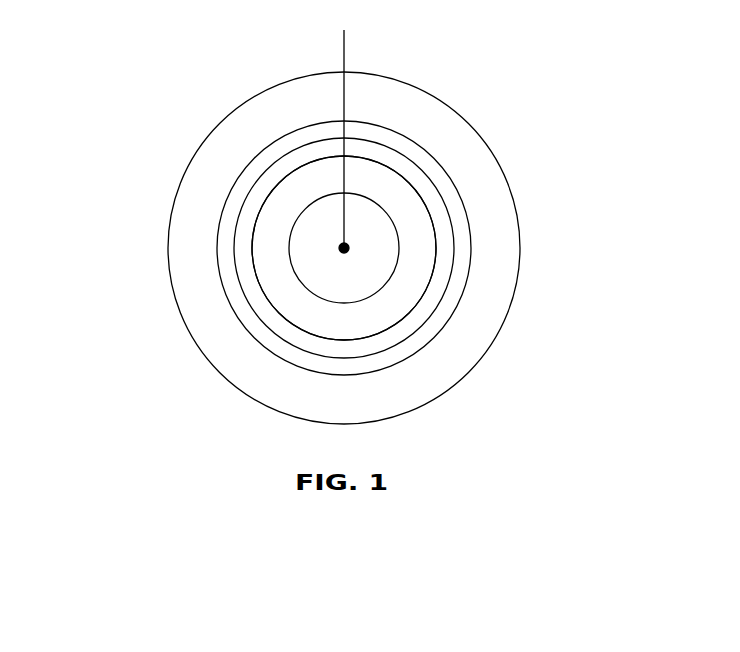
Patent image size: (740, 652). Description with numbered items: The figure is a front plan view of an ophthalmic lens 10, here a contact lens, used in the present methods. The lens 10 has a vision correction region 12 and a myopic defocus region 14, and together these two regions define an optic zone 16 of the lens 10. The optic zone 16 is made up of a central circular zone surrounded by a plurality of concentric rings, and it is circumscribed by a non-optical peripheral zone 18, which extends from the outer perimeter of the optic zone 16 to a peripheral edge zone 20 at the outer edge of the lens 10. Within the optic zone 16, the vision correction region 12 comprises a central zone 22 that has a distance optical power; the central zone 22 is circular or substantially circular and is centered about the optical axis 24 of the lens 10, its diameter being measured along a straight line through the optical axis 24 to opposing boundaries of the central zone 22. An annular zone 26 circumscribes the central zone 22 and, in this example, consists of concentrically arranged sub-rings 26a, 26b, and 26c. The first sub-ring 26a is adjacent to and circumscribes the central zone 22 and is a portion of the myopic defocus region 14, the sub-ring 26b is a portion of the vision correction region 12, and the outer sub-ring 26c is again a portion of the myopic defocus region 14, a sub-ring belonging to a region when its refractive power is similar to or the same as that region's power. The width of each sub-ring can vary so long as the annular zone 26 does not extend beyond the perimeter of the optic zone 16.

The ophthalmic lens 10 is at (327, 308).
The vision correction region 12 is at (308, 157).
The myopic defocus region 14 is at (410, 291).
The optic zone 16 is at (331, 245).
The non-optical peripheral zone 18 is at (477, 504).
The peripheral edge zone 20 is at (533, 502).
The central zone 22 is at (451, 133).
The optical axis 24 is at (345, 126).
The annular zone 26 is at (258, 280).
The sub-ring 26a is at (274, 272).
The sub-ring 26b is at (263, 303).
The sub-ring 26c is at (274, 349).